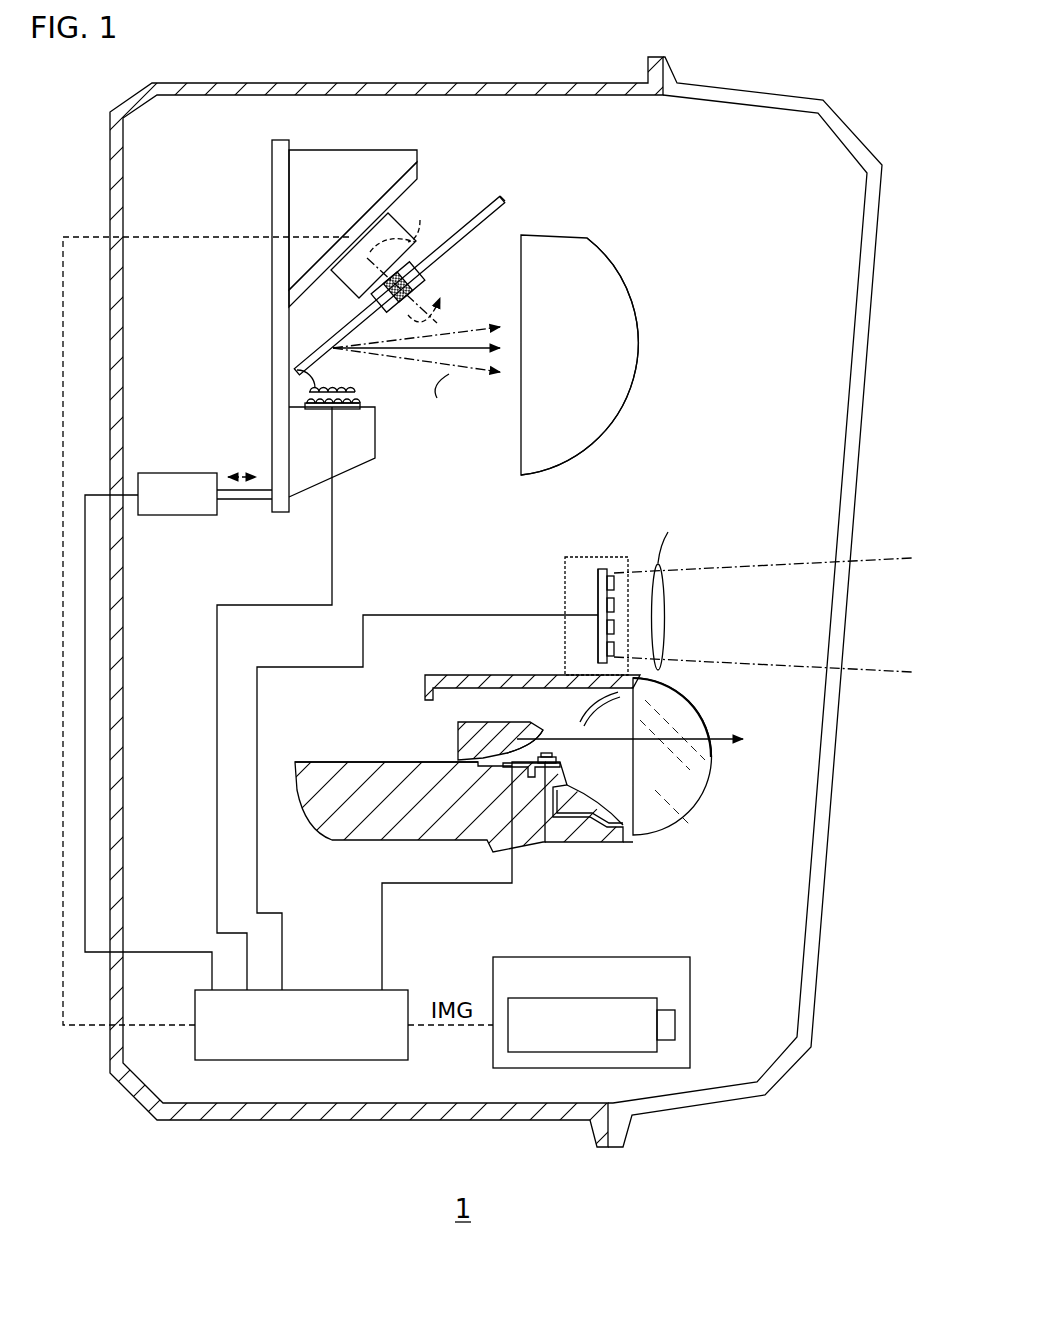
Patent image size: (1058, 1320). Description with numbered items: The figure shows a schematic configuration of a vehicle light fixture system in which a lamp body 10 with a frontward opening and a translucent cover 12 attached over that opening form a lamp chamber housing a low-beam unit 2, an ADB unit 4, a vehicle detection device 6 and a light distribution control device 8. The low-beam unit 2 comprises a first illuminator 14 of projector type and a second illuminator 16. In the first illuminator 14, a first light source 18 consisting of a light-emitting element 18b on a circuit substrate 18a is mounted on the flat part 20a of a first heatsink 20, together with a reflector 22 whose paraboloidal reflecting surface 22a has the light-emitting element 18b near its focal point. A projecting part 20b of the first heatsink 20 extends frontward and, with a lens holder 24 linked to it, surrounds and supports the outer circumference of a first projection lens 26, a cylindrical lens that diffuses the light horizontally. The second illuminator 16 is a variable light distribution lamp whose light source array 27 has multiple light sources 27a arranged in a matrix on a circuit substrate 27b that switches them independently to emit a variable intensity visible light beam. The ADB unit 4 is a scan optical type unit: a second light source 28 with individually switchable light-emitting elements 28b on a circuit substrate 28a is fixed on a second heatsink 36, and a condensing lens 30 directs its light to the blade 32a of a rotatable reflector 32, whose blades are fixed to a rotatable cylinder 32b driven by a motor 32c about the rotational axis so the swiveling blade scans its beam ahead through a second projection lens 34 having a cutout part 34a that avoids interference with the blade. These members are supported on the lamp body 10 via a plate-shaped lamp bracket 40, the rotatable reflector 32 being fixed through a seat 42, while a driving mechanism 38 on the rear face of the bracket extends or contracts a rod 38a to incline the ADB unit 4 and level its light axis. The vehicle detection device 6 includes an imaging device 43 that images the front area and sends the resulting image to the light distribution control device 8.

The low-beam unit 2 is at (702, 862).
The ADB unit 4 is at (626, 180).
The vehicle detection device 6 is at (653, 957).
The light distribution control device 8 is at (330, 1062).
The lamp body 10 is at (215, 1121).
The translucent cover 12 is at (793, 1068).
The first illuminator 14 is at (710, 768).
The second illuminator 16 is at (617, 557).
The first light source 18 is at (540, 770).
The circuit substrate 18a is at (563, 770).
The light-emitting element 18b is at (552, 757).
The first heatsink 20 is at (315, 832).
The flat part 20a is at (340, 762).
The projecting part 20b is at (612, 838).
The reflector 22 is at (445, 738).
The reflecting surface 22a is at (497, 750).
The lens holder 24 is at (433, 674).
The first projection lens 26 is at (700, 795).
The light source array 27 is at (590, 626).
The light sources 27a is at (604, 636).
The circuit substrate 27b is at (598, 572).
The second light source 28 is at (296, 388).
The circuit substrate 28a is at (310, 414).
The light-emitting elements 28b is at (293, 398).
The condensing lens 30 is at (297, 367).
The rotatable reflector 32 is at (443, 203).
The blade 32a is at (505, 197).
The rotatable cylinder 32b is at (433, 250).
The motor 32c is at (348, 292).
The second projection lens 34 is at (620, 413).
The cutout part 34a is at (590, 238).
The second heatsink 36 is at (376, 436).
The driving mechanism 38 is at (180, 518).
The rod 38a is at (245, 502).
The lamp bracket 40 is at (279, 514).
The seat 42 is at (343, 150).
The imaging device 43 is at (600, 1052).